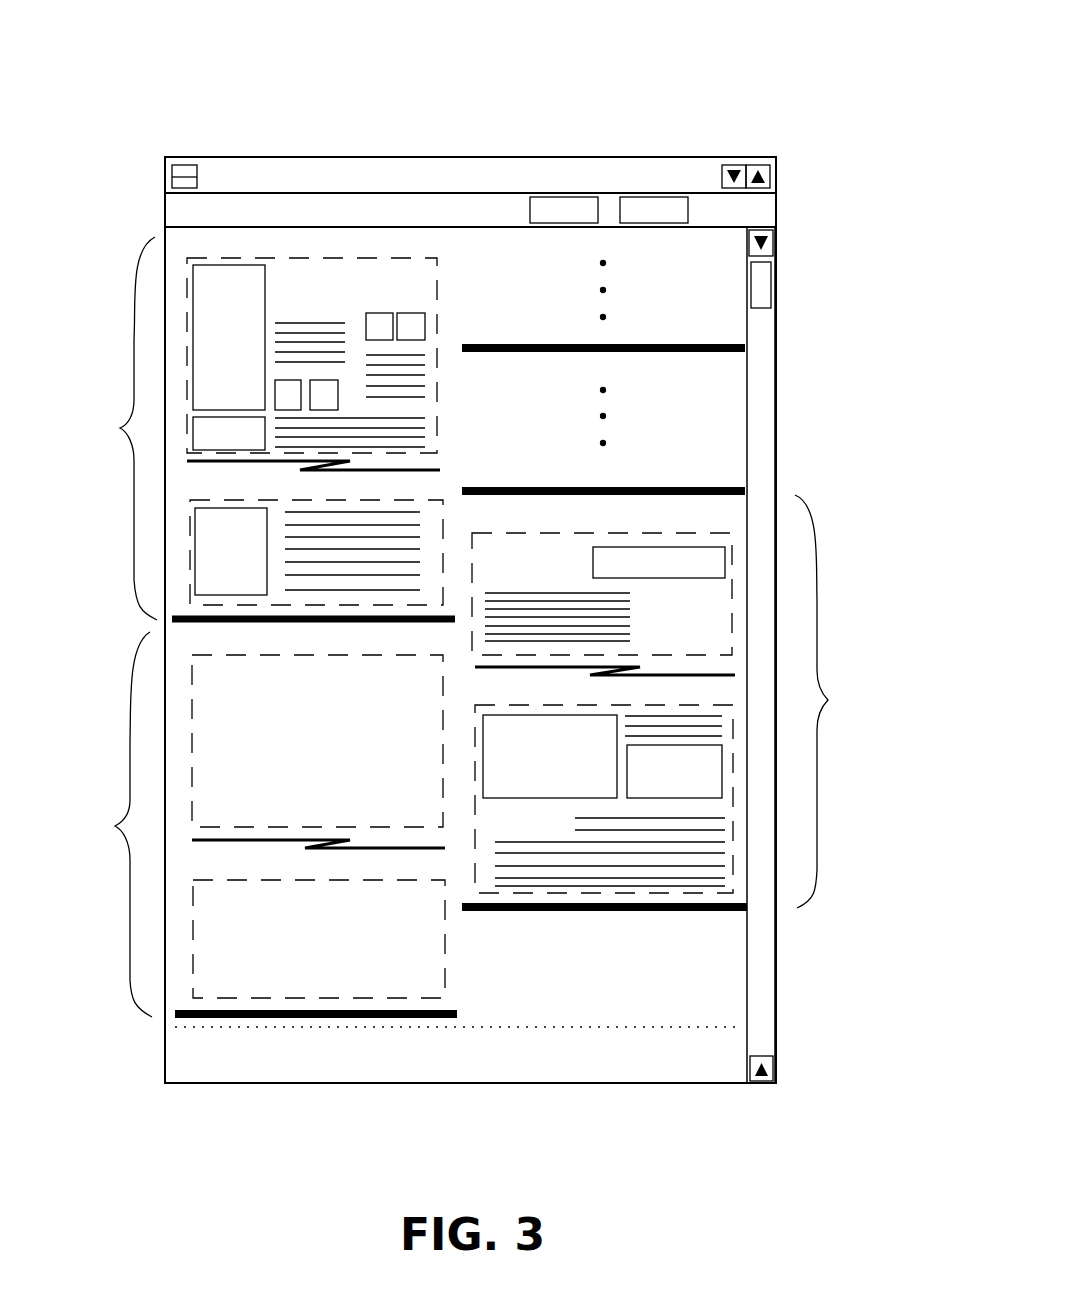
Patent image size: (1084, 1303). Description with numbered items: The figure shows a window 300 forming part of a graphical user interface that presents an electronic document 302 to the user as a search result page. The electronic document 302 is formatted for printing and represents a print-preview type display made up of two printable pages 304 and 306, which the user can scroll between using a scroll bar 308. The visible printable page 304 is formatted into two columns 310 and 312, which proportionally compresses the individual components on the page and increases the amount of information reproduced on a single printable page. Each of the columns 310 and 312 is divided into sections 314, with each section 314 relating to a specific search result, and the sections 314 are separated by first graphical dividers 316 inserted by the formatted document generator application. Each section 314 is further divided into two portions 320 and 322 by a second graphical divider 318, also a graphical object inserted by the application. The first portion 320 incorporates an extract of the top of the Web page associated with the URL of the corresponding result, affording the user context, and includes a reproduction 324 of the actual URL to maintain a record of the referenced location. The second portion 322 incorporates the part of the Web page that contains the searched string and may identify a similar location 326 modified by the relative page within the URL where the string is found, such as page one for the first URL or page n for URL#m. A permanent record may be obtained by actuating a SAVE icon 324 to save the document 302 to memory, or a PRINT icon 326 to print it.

The window 300 is at (772, 105).
The electronic document 302 is at (730, 1015).
The printable page 304 is at (692, 975).
The printable page 306 is at (698, 1057).
The scroll bar 308 is at (770, 283).
The column 310 is at (342, 1052).
The column 312 is at (627, 968).
The section 314 is at (477, 627).
The first graphical divider 316 is at (745, 350).
The second graphical divider 318 is at (195, 460).
The first portion 320 is at (188, 310).
The second portion 322 is at (194, 562).
The URL reproduction 324 is at (188, 240).
The location identifier 326 is at (190, 487).